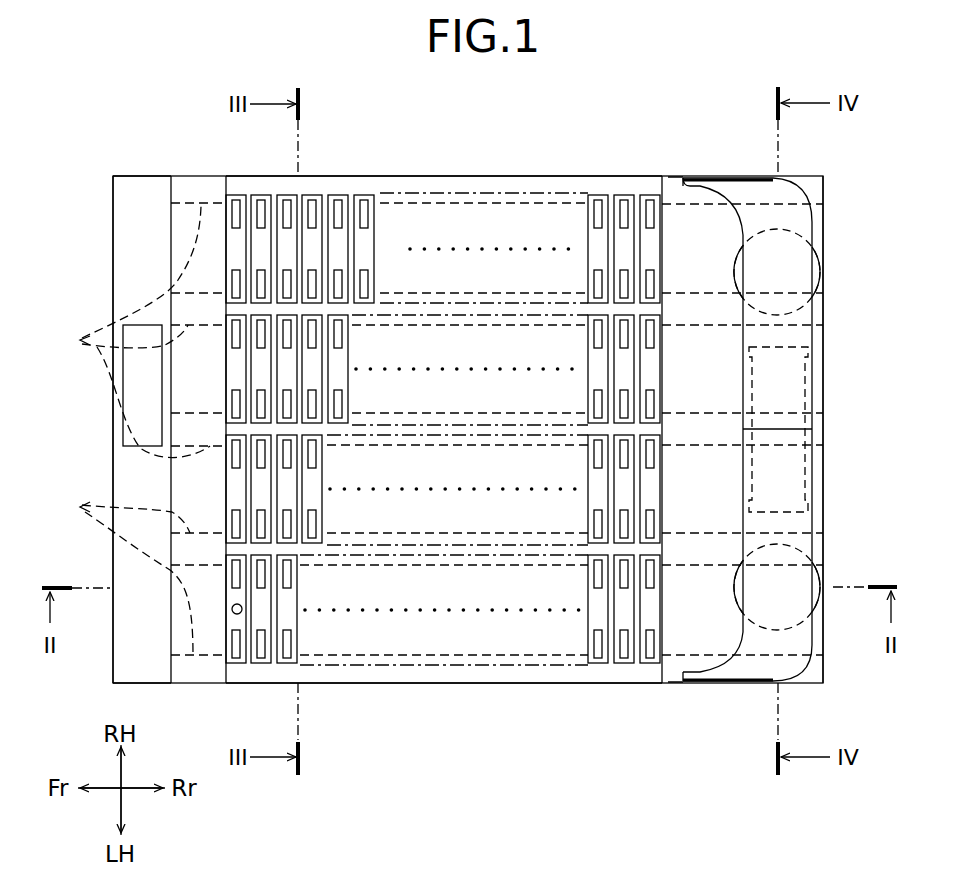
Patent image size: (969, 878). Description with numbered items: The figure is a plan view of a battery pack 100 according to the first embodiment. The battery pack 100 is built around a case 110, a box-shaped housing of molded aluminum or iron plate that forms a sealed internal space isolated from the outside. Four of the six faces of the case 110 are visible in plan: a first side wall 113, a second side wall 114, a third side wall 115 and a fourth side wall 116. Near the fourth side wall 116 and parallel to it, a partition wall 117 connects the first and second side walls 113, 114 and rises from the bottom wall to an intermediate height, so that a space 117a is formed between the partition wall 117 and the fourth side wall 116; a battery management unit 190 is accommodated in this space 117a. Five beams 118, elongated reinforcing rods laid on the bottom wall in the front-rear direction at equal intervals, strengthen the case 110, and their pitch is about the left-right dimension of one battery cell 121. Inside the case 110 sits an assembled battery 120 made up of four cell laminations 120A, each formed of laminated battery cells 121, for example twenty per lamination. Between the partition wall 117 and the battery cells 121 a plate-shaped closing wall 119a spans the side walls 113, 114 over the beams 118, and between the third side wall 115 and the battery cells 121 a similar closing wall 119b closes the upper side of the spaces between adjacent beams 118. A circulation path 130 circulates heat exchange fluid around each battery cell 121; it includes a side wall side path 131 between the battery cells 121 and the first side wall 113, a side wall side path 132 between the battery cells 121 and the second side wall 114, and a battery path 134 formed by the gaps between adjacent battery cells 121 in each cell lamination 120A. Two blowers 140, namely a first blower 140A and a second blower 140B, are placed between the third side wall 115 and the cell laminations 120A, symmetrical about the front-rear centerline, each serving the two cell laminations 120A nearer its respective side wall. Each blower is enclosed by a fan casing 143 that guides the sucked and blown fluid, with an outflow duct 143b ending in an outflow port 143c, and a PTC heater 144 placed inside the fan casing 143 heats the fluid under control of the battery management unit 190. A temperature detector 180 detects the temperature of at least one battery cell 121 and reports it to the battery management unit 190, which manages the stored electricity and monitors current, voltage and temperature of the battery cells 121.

The battery pack 100 is at (145, 174).
The case 110 is at (182, 176).
The first side wall 113 is at (367, 683).
The second side wall 114 is at (328, 176).
The third side wall 115 is at (823, 235).
The fourth side wall 116 is at (113, 226).
The partition wall 117 is at (171, 253).
The space 117a is at (135, 289).
The beams 118 is at (121, 430).
The closing wall 119a is at (185, 483).
The closing wall 119b is at (728, 470).
The assembled battery 120 is at (367, 190).
The cell lamination 120A is at (420, 190).
The battery cell 121 is at (597, 240).
The circulation path 130 is at (434, 670).
The side wall side path 131 is at (512, 668).
The side wall side path 132 is at (508, 183).
The battery path 134 is at (612, 240).
The blower 140 is at (839, 429).
The first blower 140A is at (823, 572).
The second blower 140B is at (823, 272).
The fan casing 143 is at (812, 205).
The outflow duct 143b is at (735, 188).
The outflow port 143c is at (683, 178).
The PTC heater 144 is at (808, 372).
The temperature detector 180 is at (234, 614).
The battery management unit 190 is at (125, 430).